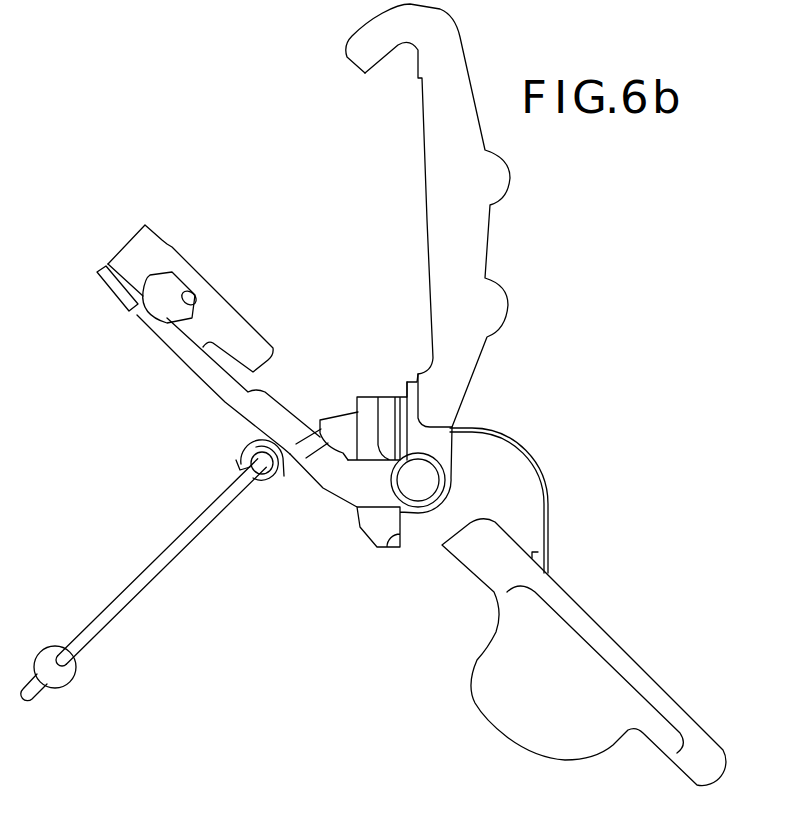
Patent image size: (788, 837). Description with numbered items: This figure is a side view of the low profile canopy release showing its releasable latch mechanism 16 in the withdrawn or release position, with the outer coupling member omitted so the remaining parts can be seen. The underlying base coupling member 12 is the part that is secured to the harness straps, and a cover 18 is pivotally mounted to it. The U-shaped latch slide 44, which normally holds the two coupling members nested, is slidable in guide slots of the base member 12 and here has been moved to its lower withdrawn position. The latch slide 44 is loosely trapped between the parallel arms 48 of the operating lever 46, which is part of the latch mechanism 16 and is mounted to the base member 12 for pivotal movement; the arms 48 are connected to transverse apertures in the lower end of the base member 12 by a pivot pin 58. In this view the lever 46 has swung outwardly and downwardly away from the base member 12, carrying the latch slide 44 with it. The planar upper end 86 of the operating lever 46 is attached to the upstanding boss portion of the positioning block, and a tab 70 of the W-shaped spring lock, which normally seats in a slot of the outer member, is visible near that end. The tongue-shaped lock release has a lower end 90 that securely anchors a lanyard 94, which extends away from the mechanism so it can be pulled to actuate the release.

The base coupling member 12 is at (471, 177).
The releasable latch mechanism 16 is at (186, 342).
The cover 18 is at (560, 690).
The latch slide 44 is at (363, 402).
The operating lever 46 is at (140, 312).
The parallel arms 48 is at (423, 487).
The pivot pin 58 is at (430, 482).
The tab 70 is at (193, 282).
The planar upper end 86 is at (98, 278).
The lower end 90 is at (266, 483).
The lanyard 94 is at (108, 627).